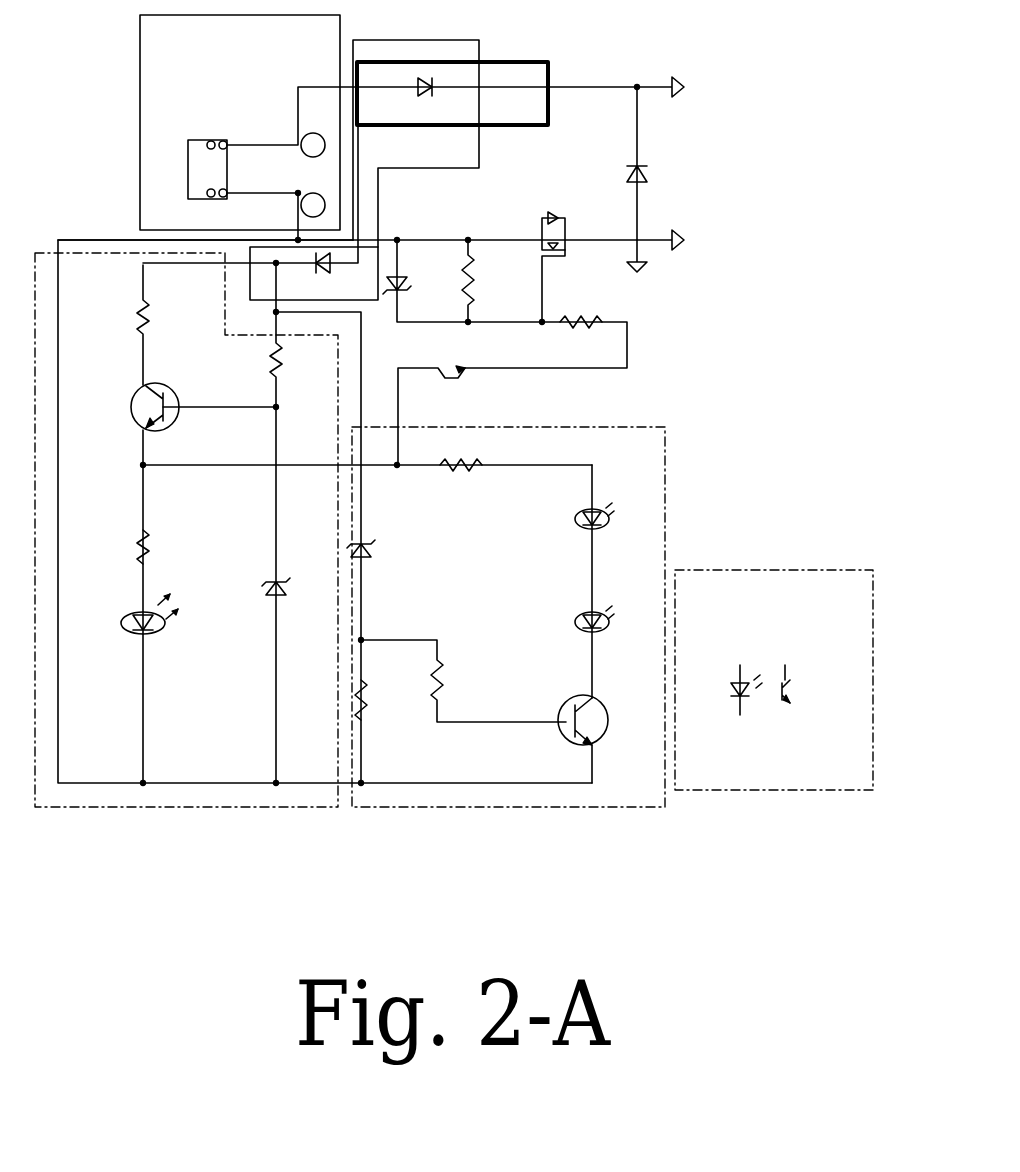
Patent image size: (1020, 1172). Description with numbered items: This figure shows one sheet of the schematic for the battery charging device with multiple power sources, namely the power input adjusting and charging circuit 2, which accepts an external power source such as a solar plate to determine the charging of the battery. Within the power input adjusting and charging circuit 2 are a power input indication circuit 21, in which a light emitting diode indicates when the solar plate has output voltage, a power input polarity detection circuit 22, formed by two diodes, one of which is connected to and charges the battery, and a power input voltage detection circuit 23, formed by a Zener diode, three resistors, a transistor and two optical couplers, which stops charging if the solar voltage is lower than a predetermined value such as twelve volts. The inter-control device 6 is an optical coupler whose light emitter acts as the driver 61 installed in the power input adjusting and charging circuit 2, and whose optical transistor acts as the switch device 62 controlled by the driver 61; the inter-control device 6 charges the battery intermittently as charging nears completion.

The power input adjusting and charging circuit 2 is at (333, 803).
The power input indication circuit 21 is at (152, 807).
The power input polarity detection circuit 22 is at (384, 40).
The power input voltage detection circuit 23 is at (442, 807).
The inter-control device 6 is at (720, 793).
The driver 61 is at (723, 695).
The switch device 62 is at (805, 702).